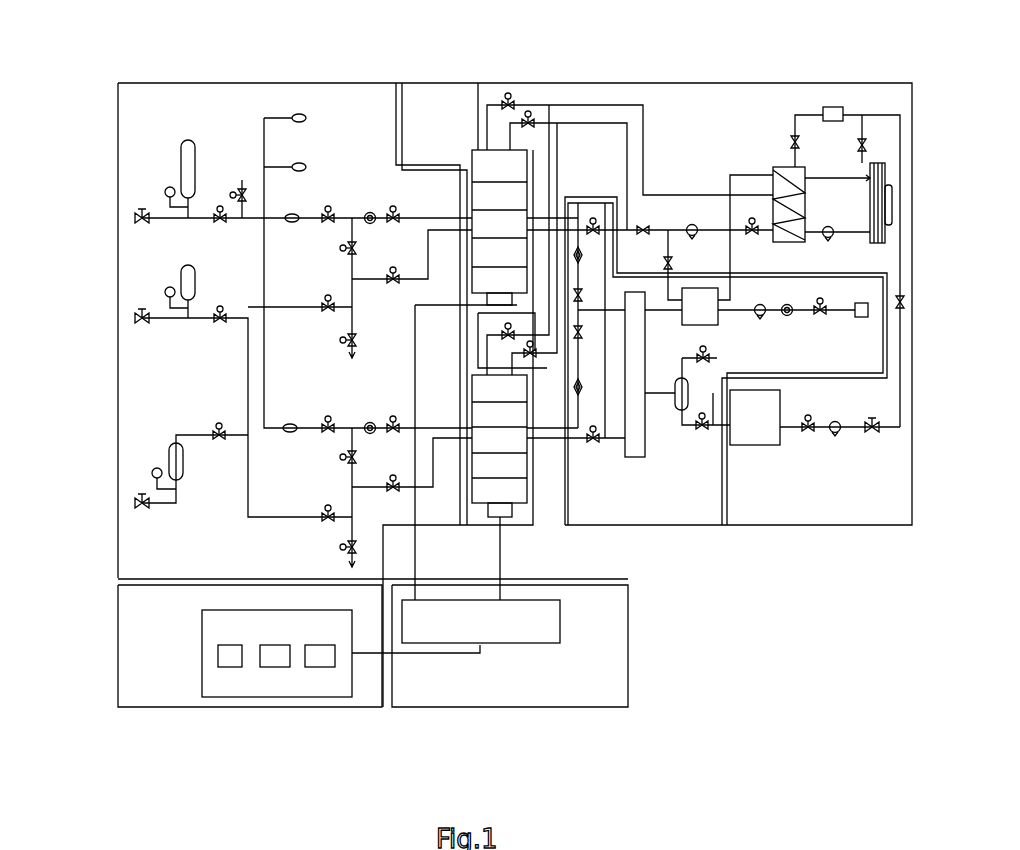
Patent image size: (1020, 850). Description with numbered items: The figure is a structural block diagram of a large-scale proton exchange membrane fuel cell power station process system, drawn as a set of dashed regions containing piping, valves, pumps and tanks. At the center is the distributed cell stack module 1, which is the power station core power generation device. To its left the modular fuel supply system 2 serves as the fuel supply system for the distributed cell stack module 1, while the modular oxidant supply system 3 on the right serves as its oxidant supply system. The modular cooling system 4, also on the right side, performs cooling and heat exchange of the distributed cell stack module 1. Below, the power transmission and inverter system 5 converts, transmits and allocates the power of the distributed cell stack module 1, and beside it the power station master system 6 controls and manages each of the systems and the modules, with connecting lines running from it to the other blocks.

The distributed cell stack module 1 is at (420, 83).
The modular fuel supply system 2 is at (118, 262).
The modular oxidant supply system 3 is at (660, 527).
The modular cooling system 4 is at (728, 83).
The power transmission and inverter system 5 is at (628, 650).
The power station master system 6 is at (118, 650).